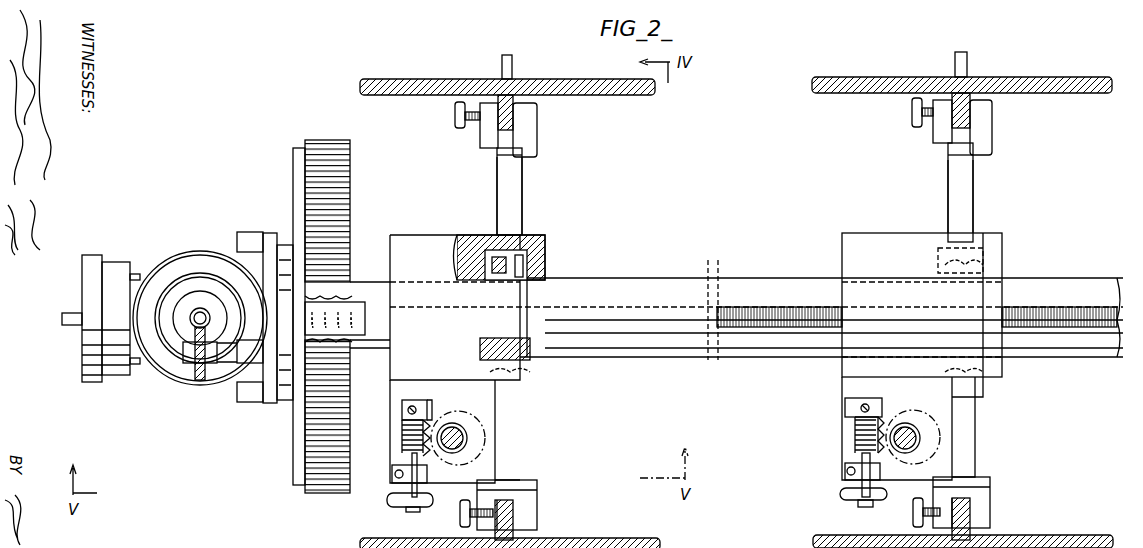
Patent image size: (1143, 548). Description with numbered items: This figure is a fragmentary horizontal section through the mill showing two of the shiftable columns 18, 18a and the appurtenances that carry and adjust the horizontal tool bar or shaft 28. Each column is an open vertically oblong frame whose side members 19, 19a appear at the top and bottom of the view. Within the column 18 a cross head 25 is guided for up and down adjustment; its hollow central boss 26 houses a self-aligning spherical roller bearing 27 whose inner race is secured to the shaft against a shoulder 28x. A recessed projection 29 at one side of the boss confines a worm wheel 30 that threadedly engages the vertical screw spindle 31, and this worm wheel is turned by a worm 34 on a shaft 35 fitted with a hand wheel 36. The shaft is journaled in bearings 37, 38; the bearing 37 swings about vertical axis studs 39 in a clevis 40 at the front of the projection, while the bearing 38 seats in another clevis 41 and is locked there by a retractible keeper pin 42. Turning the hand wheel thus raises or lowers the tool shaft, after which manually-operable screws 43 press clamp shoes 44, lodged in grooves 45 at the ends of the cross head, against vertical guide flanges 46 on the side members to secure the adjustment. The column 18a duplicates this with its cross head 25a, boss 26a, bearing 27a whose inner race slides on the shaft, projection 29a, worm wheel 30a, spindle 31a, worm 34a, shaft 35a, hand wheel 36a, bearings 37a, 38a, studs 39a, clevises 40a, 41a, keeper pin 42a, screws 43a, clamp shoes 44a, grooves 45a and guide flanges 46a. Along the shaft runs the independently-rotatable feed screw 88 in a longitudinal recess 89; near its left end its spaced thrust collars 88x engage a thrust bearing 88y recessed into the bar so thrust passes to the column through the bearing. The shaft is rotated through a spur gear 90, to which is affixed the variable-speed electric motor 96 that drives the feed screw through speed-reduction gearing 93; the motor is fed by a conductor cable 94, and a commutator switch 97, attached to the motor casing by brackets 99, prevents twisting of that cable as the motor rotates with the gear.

The column 18 is at (580, 45).
The side members 19 is at (645, 95).
The cross head 25 is at (560, 140).
The hollow central boss 26 is at (428, 238).
The self-aligning spherical roller bearing 27 is at (530, 262).
The tool bar or shaft 28 is at (666, 278).
The shoulder 28x is at (530, 298).
The recessed projection 29 is at (487, 410).
The worm wheel 30 is at (486, 437).
The vertical screw spindle 31 is at (463, 445).
The worm 34 is at (402, 445).
The shaft 35 is at (405, 498).
The hand wheel 36 is at (392, 505).
The bearing 37 is at (402, 412).
The bearing 38 is at (425, 468).
The vertical axis studs 39 is at (410, 408).
The clevis 40 is at (432, 410).
The clevis 41 is at (418, 485).
The retractible keeper pin 42 is at (392, 474).
The manually-operable screws 43 is at (455, 115).
The clamp shoes 44 is at (488, 130).
The grooves 45 is at (497, 152).
The vertical guide flanges 46 is at (520, 112).
The feed screw 88 is at (720, 275).
The thrust collars 88x is at (352, 305).
The thrust bearing 88y is at (368, 305).
The longitudinal recess 89 is at (755, 307).
The spur gear 90 is at (327, 140).
The speed-reduction gearing 93 is at (290, 422).
The conductor cable 94 is at (62, 319).
The variable-speed electric motor 96 is at (199, 250).
The commutator switch 97 is at (130, 250).
The brackets 99 is at (136, 272).
The column 18a is at (1057, 35).
The side members 19a is at (1093, 93).
The cross head 25a is at (1010, 137).
The hollow central boss 26a is at (878, 233).
The self-aligning spherical roller bearing 27a is at (983, 258).
The recessed projection 29a is at (942, 410).
The worm wheel 30a is at (940, 437).
The vertical screw spindle 31a is at (920, 445).
The worm 34a is at (856, 446).
The shaft 35a is at (865, 507).
The hand wheel 36a is at (840, 494).
The bearing 37a is at (858, 420).
The bearing 38a is at (878, 482).
The vertical axis studs 39a is at (860, 408).
The clevis 40a is at (850, 400).
The clevis 41a is at (873, 460).
The retractible keeper pin 42a is at (845, 472).
The manually-operable screws 43a is at (912, 112).
The clamp shoes 44a is at (940, 125).
The grooves 45a is at (950, 148).
The vertical guide flanges 46a is at (978, 115).